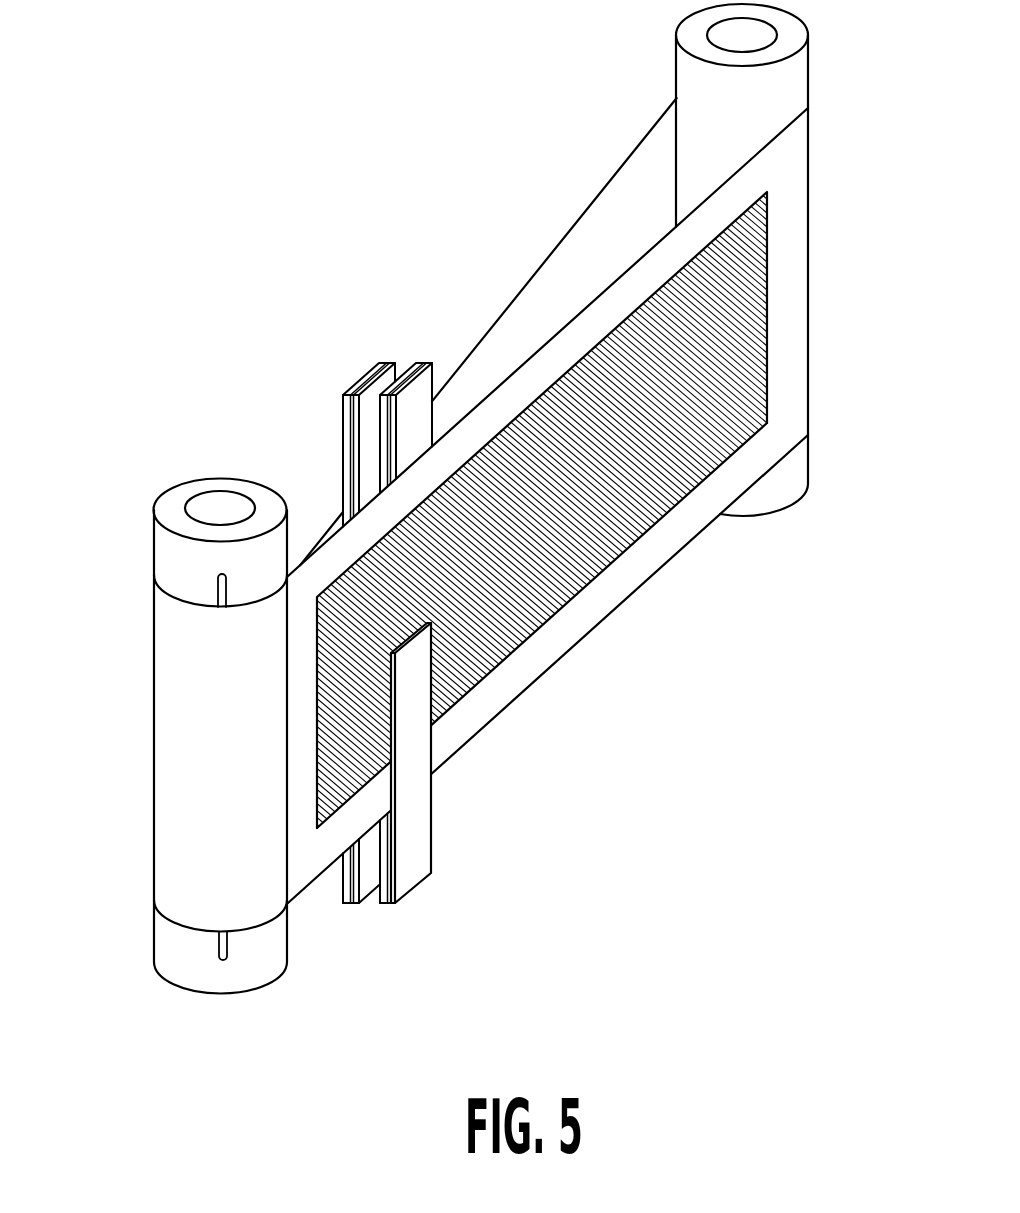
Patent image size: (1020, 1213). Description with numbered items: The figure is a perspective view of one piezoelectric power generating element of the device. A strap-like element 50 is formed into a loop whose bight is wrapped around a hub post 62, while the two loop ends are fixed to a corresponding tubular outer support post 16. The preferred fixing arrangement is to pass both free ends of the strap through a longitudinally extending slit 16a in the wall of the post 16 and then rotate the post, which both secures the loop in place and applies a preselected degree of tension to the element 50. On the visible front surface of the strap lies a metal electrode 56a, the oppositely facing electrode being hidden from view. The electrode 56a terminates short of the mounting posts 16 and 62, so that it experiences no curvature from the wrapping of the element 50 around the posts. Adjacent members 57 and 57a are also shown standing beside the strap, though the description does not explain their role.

The outer support post 16 is at (168, 549).
The slit 16a is at (218, 948).
The strap-like element 50 is at (790, 297).
The electrode 56a is at (540, 587).
The plate 57 is at (433, 845).
The plates 57a is at (342, 418).
The hub post 62 is at (793, 78).